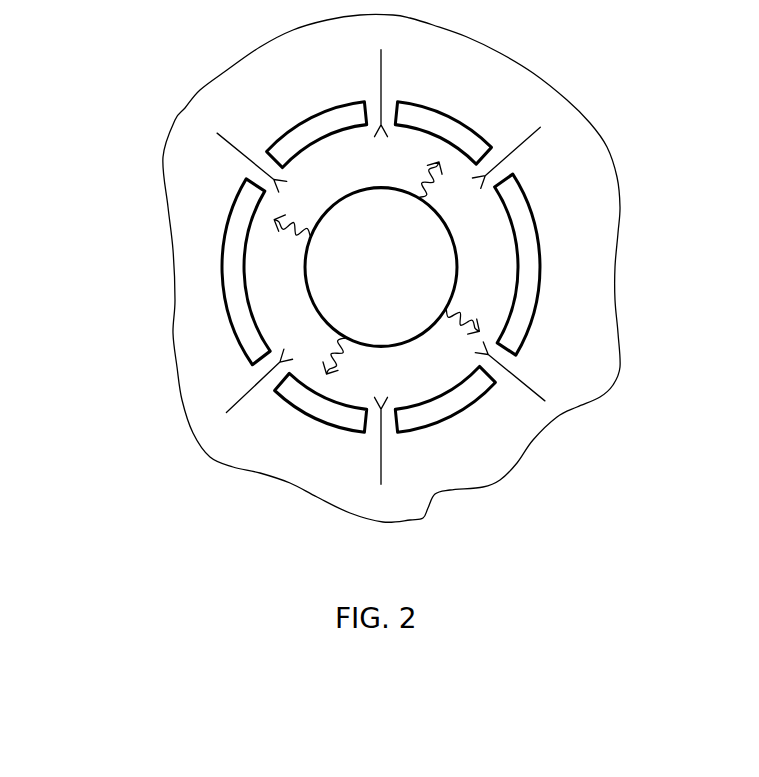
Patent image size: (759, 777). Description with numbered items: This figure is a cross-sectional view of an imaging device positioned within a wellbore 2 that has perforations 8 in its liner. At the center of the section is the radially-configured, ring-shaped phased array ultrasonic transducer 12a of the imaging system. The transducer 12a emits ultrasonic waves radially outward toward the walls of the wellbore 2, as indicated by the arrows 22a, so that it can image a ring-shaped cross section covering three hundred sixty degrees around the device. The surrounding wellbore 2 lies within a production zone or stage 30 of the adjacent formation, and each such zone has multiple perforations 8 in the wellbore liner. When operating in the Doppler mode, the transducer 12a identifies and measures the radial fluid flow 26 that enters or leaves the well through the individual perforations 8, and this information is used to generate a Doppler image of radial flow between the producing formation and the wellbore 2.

The production zones or stages 30 is at (316, 94).
The wellbore 2 is at (420, 434).
The radially-configured phased array ultrasonic transducer 12a is at (457, 245).
The arrows 22a is at (460, 318).
The perforations 8 is at (491, 158).
The radial fluid flow 26 is at (516, 387).